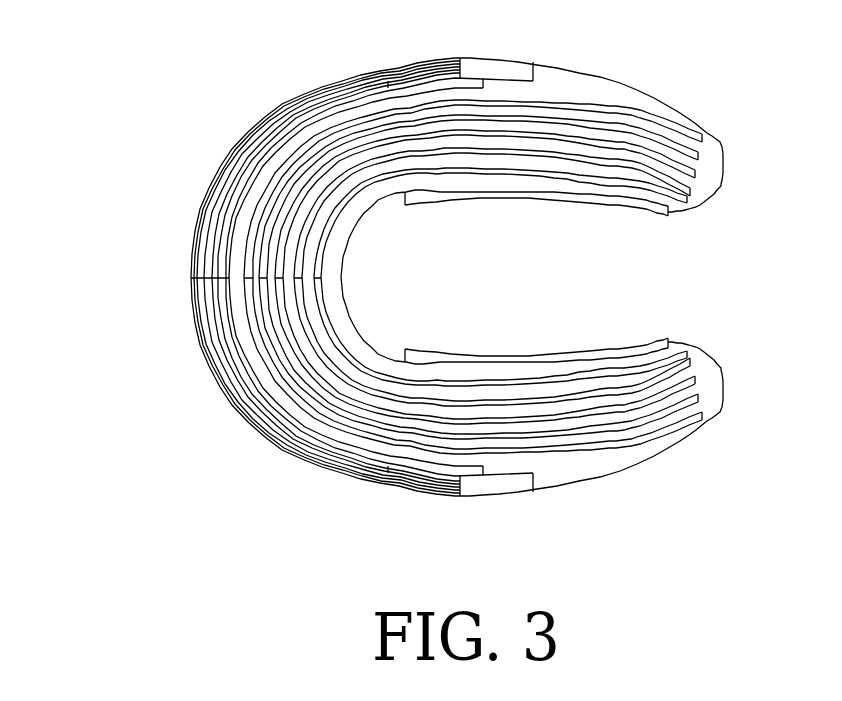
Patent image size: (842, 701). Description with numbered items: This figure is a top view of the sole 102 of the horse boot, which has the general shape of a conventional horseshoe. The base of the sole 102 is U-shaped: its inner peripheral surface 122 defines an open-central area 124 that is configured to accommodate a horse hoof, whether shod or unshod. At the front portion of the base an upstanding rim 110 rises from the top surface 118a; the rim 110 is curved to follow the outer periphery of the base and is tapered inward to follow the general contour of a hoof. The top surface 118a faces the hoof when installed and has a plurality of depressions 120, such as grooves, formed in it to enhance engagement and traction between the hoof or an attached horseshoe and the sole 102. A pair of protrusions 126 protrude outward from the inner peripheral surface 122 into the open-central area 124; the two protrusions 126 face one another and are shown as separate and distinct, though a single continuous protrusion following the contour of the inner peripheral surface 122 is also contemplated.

The sole 102 is at (150, 221).
The rim 110 is at (383, 93).
The top surface 118a is at (597, 90).
The depressions 120 is at (697, 400).
The inner peripheral surface 122 is at (340, 267).
The open-central area 124 is at (672, 262).
The protrusions 126 is at (550, 190).